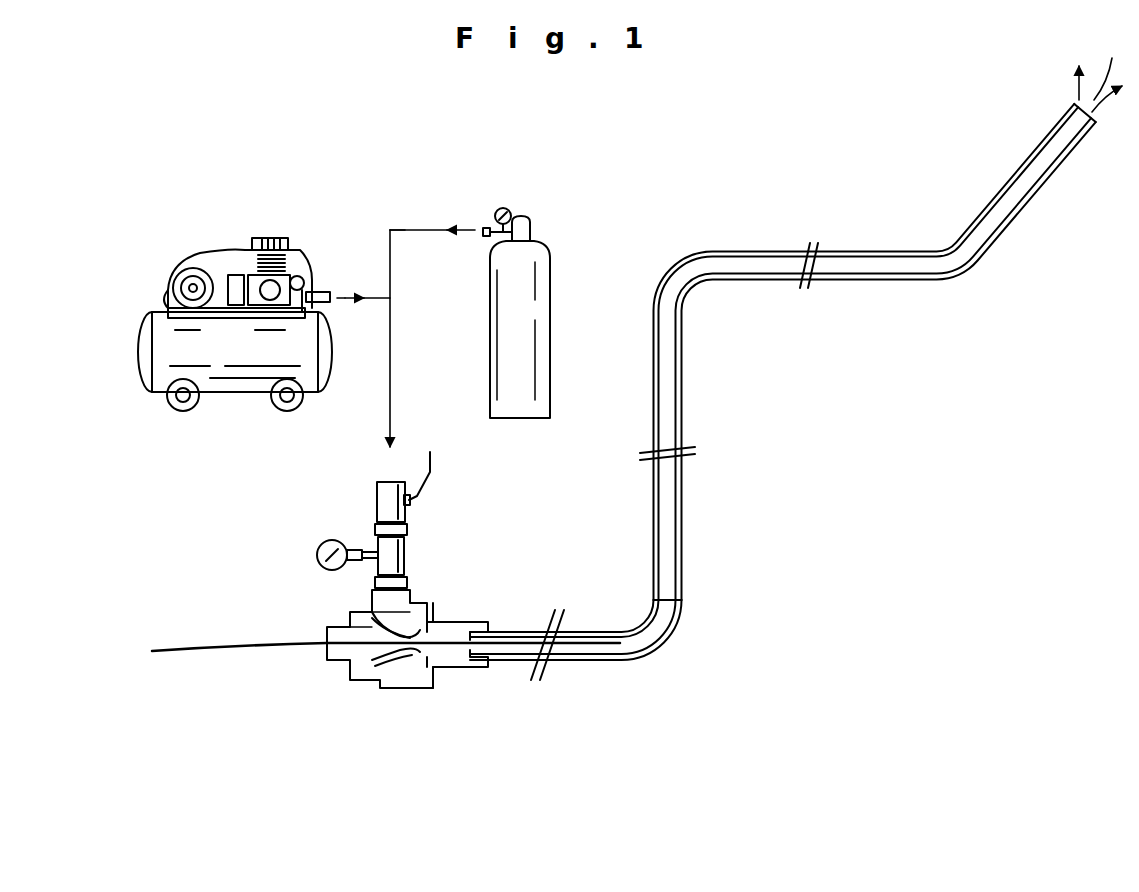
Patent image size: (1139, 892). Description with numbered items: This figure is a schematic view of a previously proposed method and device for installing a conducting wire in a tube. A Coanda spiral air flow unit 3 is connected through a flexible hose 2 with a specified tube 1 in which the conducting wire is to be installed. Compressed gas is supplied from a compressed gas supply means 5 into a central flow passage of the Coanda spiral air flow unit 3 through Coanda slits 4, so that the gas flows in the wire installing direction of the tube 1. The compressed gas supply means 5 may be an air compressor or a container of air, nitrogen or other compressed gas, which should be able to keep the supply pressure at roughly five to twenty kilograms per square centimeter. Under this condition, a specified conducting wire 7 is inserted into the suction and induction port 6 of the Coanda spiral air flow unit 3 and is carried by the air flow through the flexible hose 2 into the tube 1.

The tube 1 is at (684, 405).
The flexible hose 2 is at (584, 667).
The Coanda spiral air flow unit 3 is at (387, 683).
The Coanda slits 4 is at (416, 626).
The compressed gas supply means 5 is at (232, 252).
The suction and induction port 6 is at (323, 653).
The conducting wire 7 is at (196, 645).